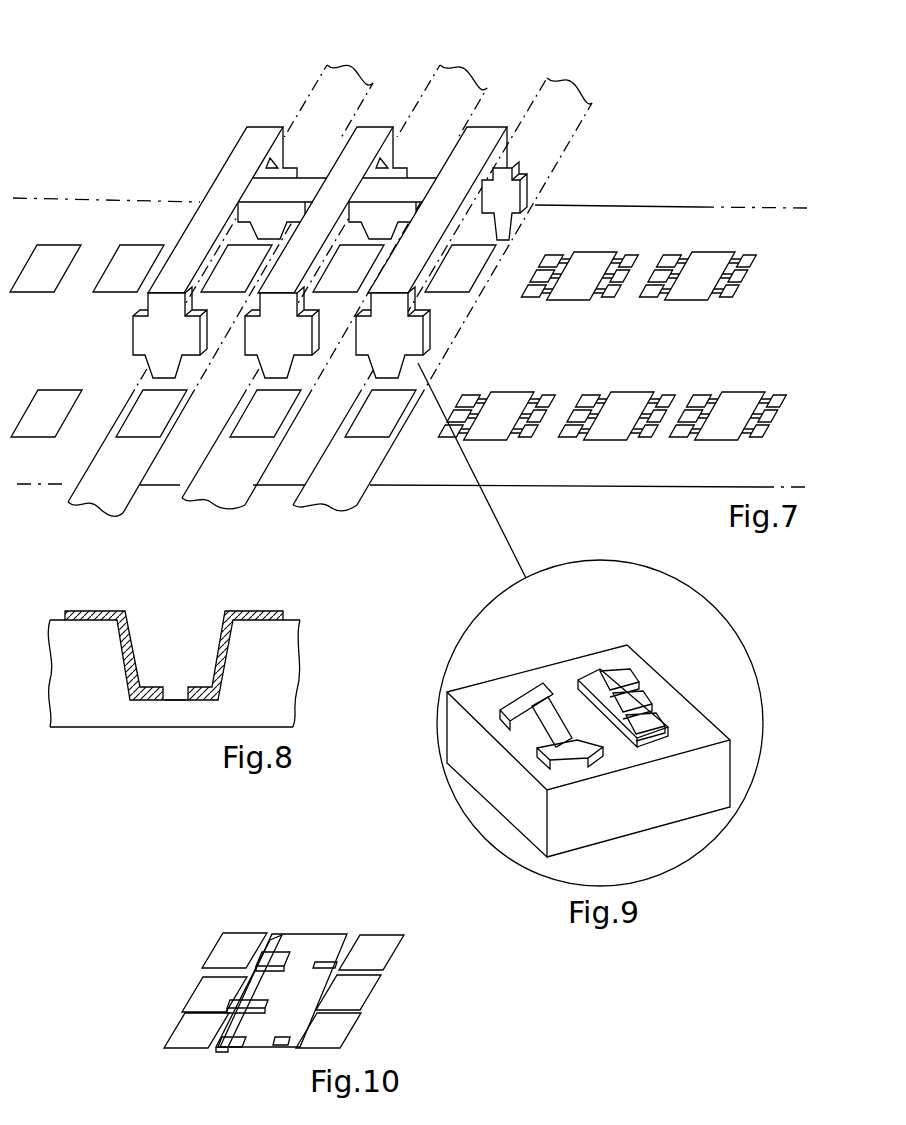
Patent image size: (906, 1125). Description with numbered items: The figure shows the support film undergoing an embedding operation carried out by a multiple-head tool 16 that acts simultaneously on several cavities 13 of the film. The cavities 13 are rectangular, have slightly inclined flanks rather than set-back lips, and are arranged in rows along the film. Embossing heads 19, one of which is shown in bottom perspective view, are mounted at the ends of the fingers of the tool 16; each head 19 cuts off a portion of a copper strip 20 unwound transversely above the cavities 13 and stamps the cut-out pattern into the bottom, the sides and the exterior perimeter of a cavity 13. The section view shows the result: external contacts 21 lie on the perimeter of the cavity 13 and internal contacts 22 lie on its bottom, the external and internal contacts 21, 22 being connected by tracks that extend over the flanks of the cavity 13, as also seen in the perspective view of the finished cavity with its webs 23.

In FIG. 7, the cavity 13 is at (48, 255).
In FIG. 10, the cavity 13 is at (304, 992).
In FIG. 7, the multiple-head tool 16 is at (193, 217).
In FIG. 9, the embossing head 19 is at (572, 658).
In FIG. 7, the copper strip 20 is at (423, 112).
In FIG. 8, the external contact 21 is at (90, 611).
In FIG. 10, the external contact 21 is at (200, 995).
In FIG. 8, the internal contact 22 is at (190, 687).
In FIG. 10, the bridge web 23 is at (323, 962).